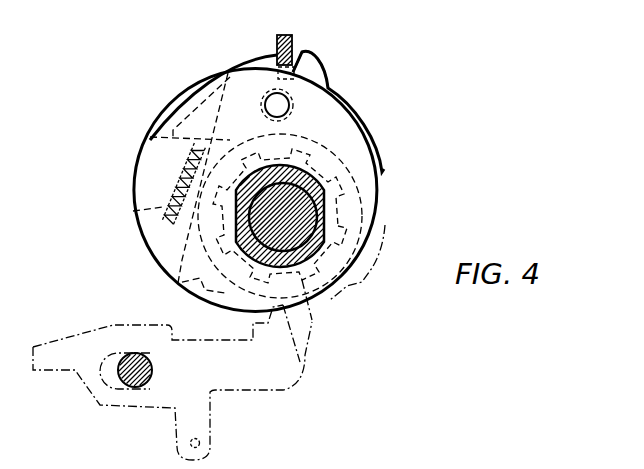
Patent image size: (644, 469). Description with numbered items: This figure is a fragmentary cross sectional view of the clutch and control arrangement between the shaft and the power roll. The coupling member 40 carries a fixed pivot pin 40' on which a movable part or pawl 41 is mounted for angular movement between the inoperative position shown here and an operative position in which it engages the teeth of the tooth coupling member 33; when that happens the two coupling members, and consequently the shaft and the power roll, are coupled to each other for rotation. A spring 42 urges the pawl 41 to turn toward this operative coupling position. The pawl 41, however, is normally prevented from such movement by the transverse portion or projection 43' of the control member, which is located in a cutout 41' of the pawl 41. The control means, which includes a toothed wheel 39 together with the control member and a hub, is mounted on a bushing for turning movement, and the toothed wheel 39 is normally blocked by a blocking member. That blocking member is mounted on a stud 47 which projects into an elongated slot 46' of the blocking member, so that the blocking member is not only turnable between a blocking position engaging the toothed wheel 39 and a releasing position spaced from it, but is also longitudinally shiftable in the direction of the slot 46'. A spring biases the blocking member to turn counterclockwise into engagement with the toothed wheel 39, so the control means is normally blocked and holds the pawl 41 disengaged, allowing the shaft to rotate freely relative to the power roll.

The coupling member 40 is at (238, 189).
The fixed pivot pin 40' is at (255, 68).
The pawl 41 is at (290, 113).
The cutout 41' is at (328, 58).
The spring 42 is at (133, 211).
The transverse portion of control member 43' is at (303, 32).
The tooth coupling member 33 is at (302, 280).
The toothed wheel 39 is at (372, 270).
The elongated slot 46' is at (108, 340).
The stud 47 is at (135, 355).